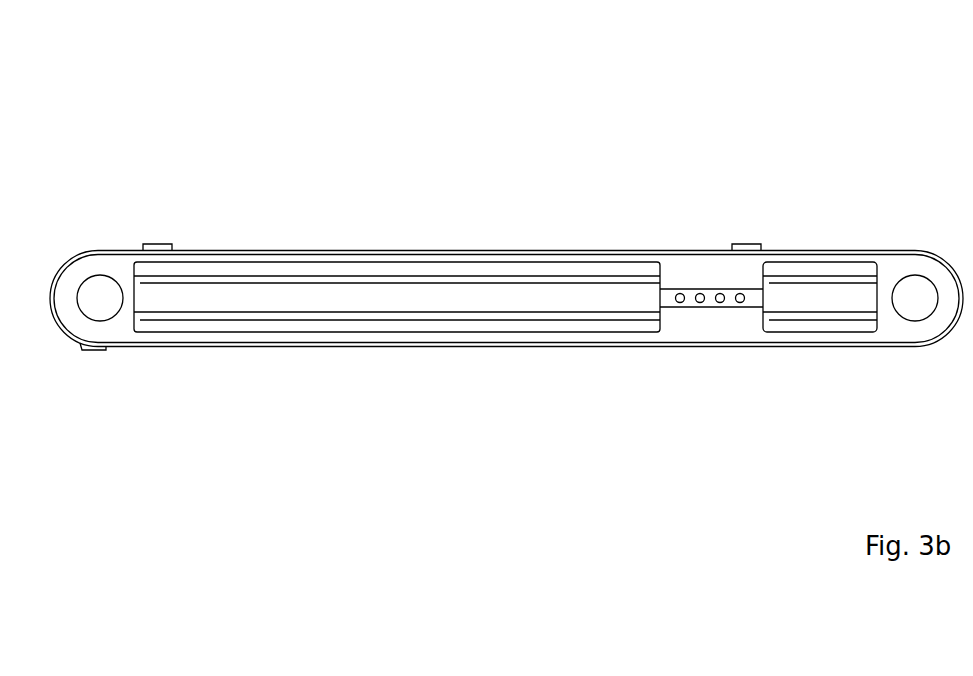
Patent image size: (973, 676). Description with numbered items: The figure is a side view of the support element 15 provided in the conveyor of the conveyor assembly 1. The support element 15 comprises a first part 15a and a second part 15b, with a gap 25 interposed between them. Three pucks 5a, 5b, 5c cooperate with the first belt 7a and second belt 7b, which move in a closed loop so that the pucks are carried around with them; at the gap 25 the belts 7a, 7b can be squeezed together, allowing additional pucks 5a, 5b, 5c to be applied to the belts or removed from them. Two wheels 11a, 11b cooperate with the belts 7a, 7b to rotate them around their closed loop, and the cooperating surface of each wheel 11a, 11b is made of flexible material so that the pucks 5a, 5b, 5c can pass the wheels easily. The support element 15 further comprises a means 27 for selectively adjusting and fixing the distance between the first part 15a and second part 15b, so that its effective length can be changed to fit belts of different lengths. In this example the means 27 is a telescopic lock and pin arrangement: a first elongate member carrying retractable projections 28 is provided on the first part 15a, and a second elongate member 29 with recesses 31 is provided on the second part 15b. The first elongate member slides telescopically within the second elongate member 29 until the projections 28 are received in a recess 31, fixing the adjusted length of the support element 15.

The conveyor assembly 1 is at (504, 227).
The puck 5a is at (90, 349).
The puck 5b is at (157, 243).
The puck 5c is at (750, 243).
The first belt 7a is at (506, 251).
The second belt 7b is at (843, 250).
The wheel 11a is at (93, 283).
The wheel 11b is at (915, 283).
The support element 15 is at (397, 251).
The first part 15a is at (352, 265).
The second part 15b is at (847, 333).
The gap 25 is at (714, 312).
The means for selectively adjusting and fixing the distance 27 is at (730, 361).
The retractable projections 28 is at (718, 307).
The second elongate member 29 is at (692, 287).
The recesses 31 is at (742, 307).